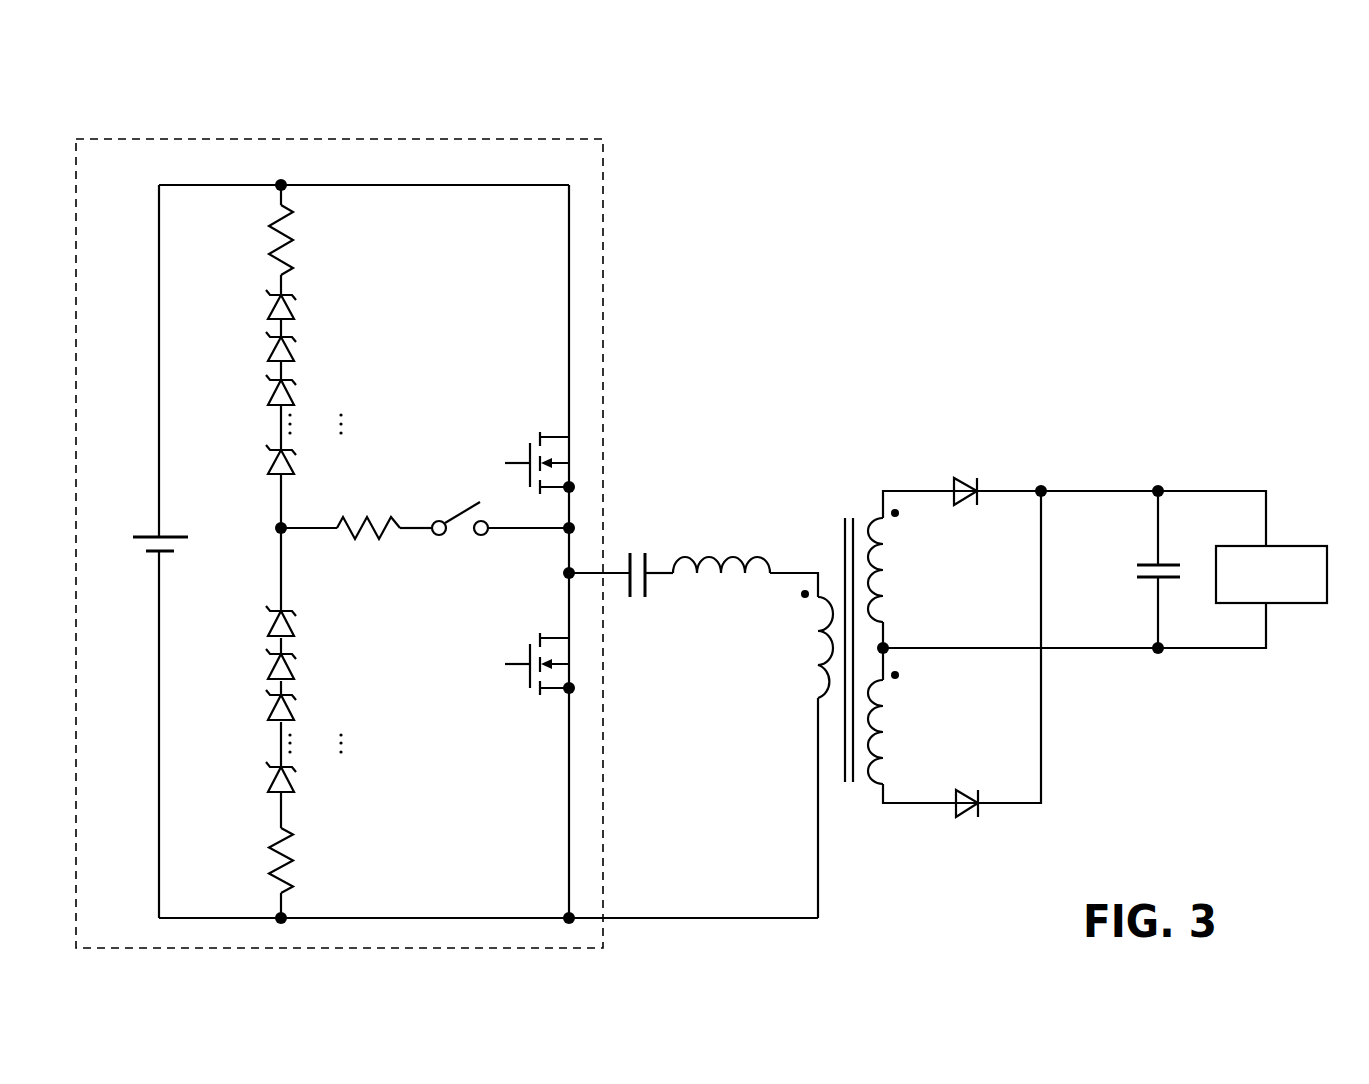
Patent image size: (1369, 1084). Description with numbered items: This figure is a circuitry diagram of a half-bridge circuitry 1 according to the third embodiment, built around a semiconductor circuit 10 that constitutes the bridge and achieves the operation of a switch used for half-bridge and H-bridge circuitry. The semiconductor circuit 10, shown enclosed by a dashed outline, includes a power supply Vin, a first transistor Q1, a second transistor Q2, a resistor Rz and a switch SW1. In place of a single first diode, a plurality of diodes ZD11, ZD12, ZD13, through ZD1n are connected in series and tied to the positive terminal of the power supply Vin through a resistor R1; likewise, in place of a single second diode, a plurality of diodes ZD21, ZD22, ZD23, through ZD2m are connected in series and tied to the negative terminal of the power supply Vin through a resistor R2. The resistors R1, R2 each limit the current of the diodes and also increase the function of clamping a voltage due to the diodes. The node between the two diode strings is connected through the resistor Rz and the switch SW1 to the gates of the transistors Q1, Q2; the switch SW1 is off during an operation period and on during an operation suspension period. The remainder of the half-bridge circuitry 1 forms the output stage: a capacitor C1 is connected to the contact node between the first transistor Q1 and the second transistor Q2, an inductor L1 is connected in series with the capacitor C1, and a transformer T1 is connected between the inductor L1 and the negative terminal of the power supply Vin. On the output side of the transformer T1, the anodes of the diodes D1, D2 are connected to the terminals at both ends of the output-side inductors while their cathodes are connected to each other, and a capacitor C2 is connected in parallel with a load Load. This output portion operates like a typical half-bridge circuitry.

The half-bridge circuitry 1 is at (867, 128).
The semiconductor circuit 10 is at (533, 138).
The power supply Vin is at (146, 525).
The resistor R1 is at (303, 240).
The resistor R2 is at (306, 860).
The resistor Rz is at (368, 547).
The diode ZD11 is at (323, 305).
The diode ZD12 is at (323, 347).
The diode ZD13 is at (323, 390).
The diode ZD1n is at (323, 460).
The diode ZD21 is at (323, 621).
The diode ZD22 is at (323, 664).
The diode ZD23 is at (323, 705).
The diode ZD2m is at (328, 777).
The switch SW1 is at (459, 539).
The first transistor Q1 is at (532, 452).
The second transistor Q2 is at (532, 651).
The capacitor C1 is at (639, 593).
The inductor L1 is at (721, 545).
The transformer T1 is at (850, 621).
The diode D1 is at (971, 475).
The diode D2 is at (973, 787).
The capacitor C2 is at (1135, 576).
The load Load is at (1271, 574).